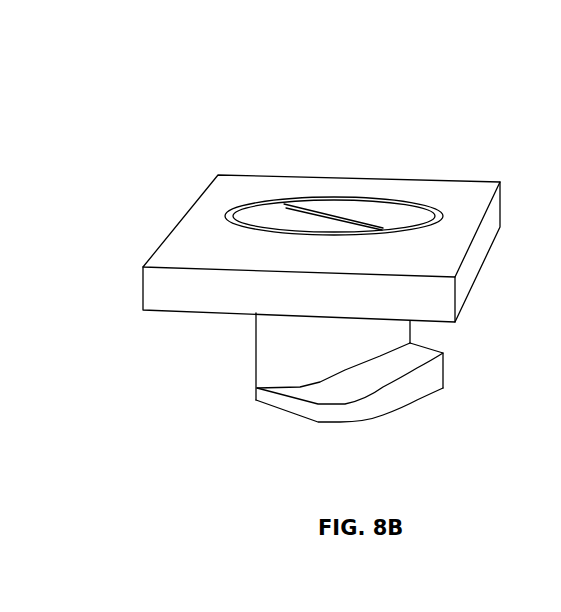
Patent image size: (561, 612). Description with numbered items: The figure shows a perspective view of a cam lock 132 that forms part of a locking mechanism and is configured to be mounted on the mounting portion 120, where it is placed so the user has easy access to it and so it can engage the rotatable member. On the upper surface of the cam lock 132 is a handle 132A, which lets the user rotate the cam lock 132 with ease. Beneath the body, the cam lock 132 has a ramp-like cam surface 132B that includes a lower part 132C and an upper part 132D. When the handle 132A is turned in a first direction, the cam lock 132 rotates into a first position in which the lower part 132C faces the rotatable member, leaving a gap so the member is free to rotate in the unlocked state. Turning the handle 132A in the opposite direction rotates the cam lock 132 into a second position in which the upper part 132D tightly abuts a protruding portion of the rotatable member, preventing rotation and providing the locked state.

The cam lock 132 is at (386, 154).
The mounting portion 120 is at (442, 253).
The handle 132A is at (293, 205).
The cam surface 132B is at (223, 318).
The lower part 132C is at (318, 390).
The upper part 132D is at (408, 355).